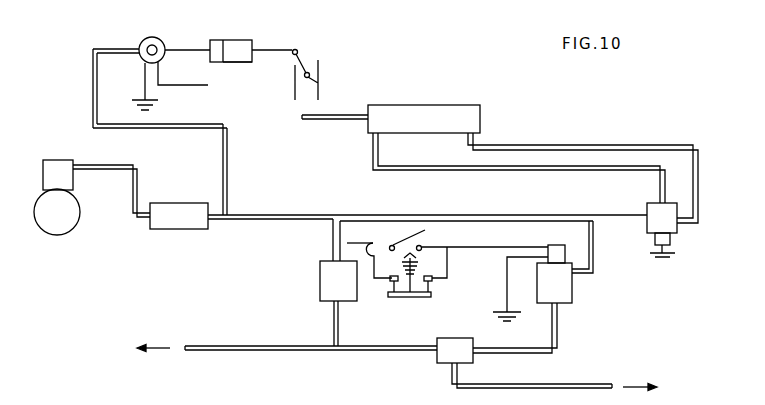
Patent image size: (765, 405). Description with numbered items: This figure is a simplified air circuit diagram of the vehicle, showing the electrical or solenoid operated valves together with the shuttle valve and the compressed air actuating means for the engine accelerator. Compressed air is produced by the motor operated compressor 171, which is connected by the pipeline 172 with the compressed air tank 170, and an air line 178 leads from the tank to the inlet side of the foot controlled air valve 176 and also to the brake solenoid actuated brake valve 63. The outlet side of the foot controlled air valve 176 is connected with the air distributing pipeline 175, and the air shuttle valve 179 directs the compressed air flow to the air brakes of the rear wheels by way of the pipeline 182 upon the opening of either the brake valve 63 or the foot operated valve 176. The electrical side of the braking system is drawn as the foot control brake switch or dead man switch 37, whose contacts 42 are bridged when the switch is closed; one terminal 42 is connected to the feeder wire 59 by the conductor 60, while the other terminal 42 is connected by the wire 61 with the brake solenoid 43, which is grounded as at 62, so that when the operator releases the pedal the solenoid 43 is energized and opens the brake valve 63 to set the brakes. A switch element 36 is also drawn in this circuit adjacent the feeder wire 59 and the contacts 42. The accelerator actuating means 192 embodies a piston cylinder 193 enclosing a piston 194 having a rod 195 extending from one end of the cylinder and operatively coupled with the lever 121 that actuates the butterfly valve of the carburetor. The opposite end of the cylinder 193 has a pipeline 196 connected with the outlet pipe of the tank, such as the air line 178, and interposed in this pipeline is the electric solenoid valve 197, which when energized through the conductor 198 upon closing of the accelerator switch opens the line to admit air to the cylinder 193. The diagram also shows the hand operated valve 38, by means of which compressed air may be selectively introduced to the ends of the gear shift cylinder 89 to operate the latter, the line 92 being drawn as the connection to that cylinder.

The switch 36 is at (402, 234).
The foot control brake switch 37 is at (418, 299).
The hand operated valve 38 is at (647, 217).
The contacts 42 is at (391, 282).
The brake solenoid 43 is at (555, 257).
The feeder wire 59 is at (362, 242).
The conductor 60 is at (379, 251).
The wire 61 is at (476, 249).
The ground 62 is at (514, 320).
The brake valve 63 is at (563, 291).
The gear shift cylinder 89 is at (415, 119).
The conduit 92 is at (331, 115).
The lever 121 is at (306, 59).
The compressed air tank 170 is at (194, 221).
The motor operated compressor 171 is at (52, 222).
The pipeline 172 is at (129, 209).
The air distributing pipeline 175 is at (287, 353).
The foot controlled air valve 176 is at (337, 280).
The air line 178 is at (228, 160).
The air shuttle valve 179 is at (443, 365).
The pipeline 182 is at (592, 384).
The compressed air actuating means 192 is at (243, 38).
The piston cylinder 193 is at (242, 63).
The piston 194 is at (217, 61).
The rod 195 is at (281, 50).
The pipeline 196 is at (181, 49).
The electric solenoid valve 197 is at (143, 40).
The conductor 198 is at (197, 88).